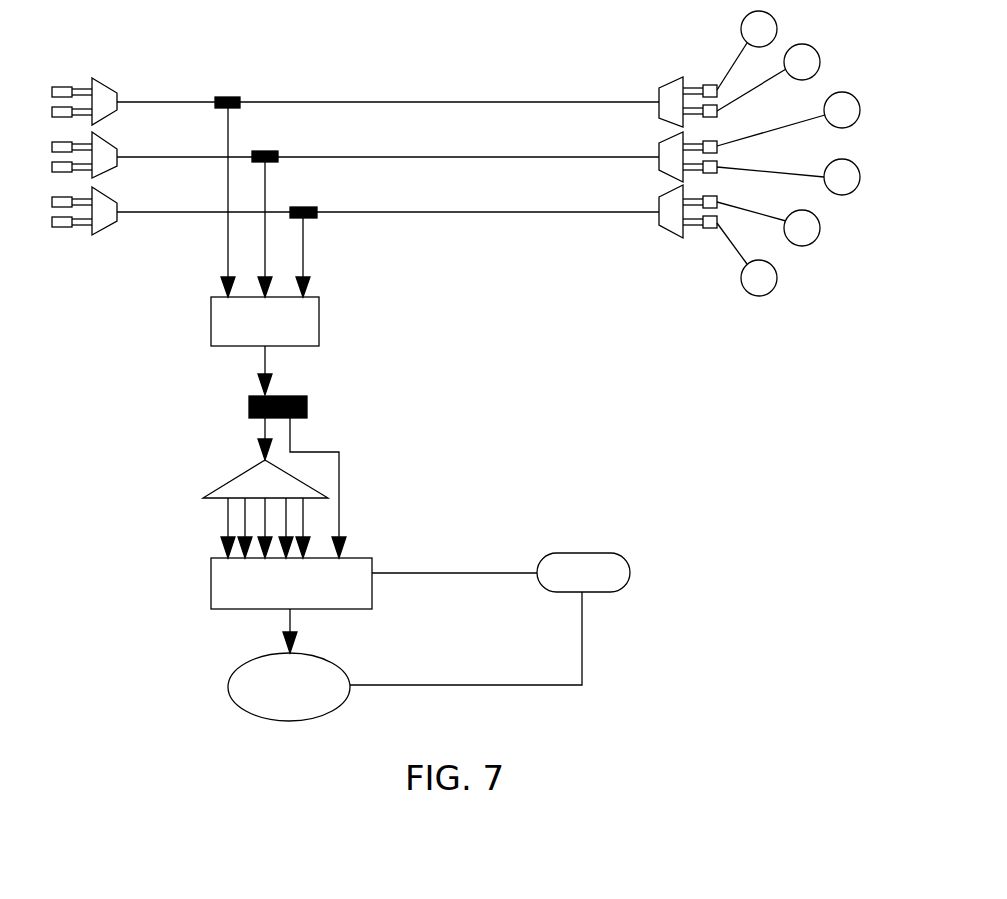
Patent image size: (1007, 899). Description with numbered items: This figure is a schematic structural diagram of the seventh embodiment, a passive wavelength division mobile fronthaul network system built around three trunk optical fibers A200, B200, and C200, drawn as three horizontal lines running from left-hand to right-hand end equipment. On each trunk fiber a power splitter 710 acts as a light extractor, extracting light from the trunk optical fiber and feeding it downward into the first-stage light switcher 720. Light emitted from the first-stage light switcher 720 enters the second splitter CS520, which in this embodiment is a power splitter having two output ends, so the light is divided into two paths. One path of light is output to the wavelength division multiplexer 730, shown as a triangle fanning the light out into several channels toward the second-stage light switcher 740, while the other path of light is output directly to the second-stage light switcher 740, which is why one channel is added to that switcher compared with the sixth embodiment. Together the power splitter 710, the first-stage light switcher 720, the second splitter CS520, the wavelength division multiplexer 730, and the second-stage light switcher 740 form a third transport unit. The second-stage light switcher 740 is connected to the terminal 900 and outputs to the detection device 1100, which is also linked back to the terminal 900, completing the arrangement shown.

The power splitter 710 is at (227, 97).
The first-stage light switcher 720 is at (320, 313).
The second splitter CS520 is at (307, 398).
The wavelength division multiplexer 730 is at (234, 478).
The second-stage light switcher 740 is at (372, 587).
The terminal 900 is at (582, 553).
The detection device 1100 is at (342, 668).
The trunk optical fiber A200 is at (510, 102).
The trunk optical fiber B200 is at (520, 157).
The trunk optical fiber C200 is at (527, 211).